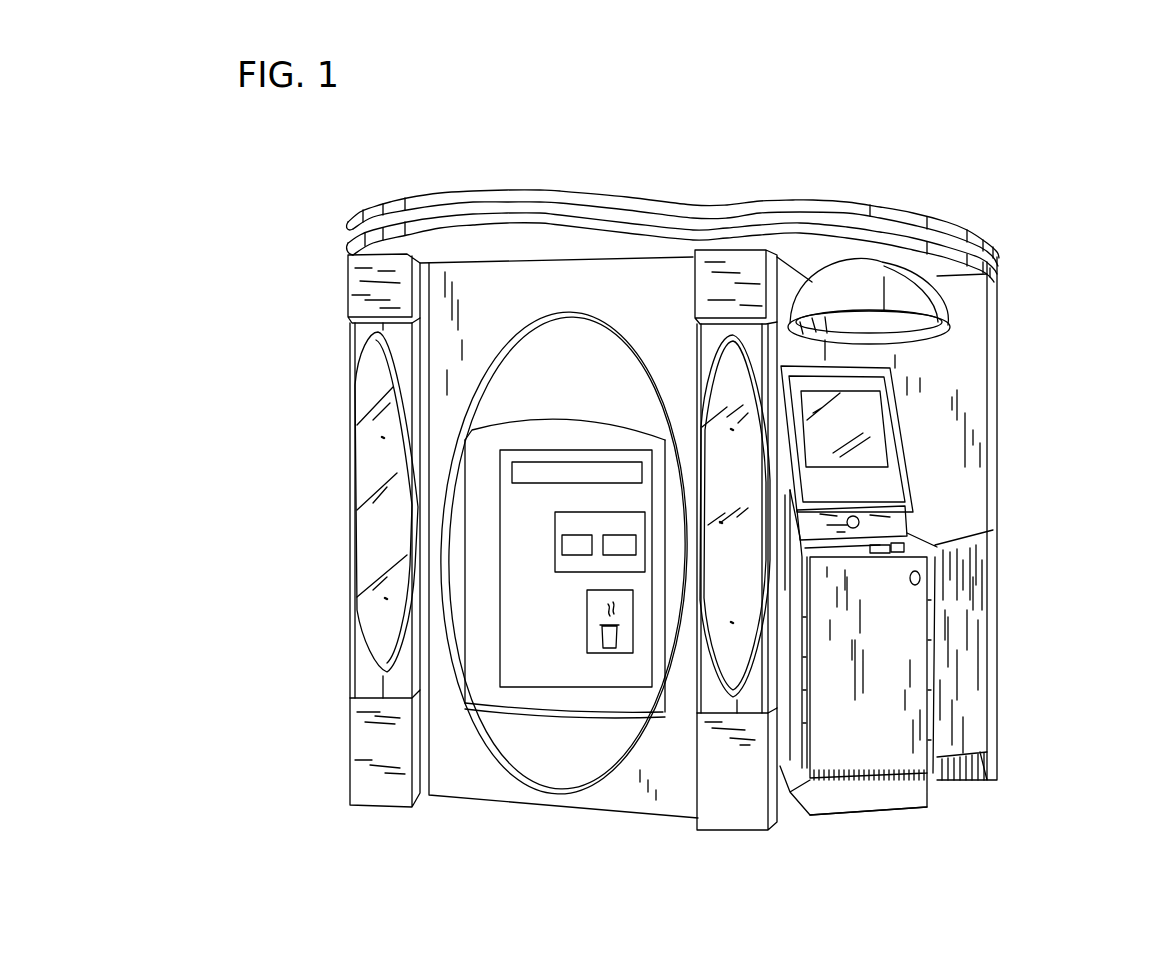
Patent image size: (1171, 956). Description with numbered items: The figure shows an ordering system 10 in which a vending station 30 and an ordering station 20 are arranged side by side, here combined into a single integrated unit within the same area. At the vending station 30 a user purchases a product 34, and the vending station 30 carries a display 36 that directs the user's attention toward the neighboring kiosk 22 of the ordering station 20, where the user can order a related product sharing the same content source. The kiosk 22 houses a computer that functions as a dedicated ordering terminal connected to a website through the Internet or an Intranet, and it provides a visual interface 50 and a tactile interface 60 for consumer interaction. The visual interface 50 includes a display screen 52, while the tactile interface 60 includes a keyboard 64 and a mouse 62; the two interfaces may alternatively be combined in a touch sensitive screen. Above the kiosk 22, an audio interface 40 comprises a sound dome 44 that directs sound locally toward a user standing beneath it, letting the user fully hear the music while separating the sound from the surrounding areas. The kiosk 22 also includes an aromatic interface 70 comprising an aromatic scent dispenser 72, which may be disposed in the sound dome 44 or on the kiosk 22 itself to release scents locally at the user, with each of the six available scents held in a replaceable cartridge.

The ordering system 10 is at (845, 116).
The ordering station 20 is at (918, 458).
The kiosk 22 is at (917, 805).
The vending station 30 is at (526, 503).
The product 34 is at (600, 638).
The display 36 is at (543, 465).
The audio interface 40 is at (950, 332).
The sound dome 44 is at (968, 292).
The visual interface 50 is at (895, 416).
The display screen 52 is at (862, 388).
The tactile interface 60 is at (885, 570).
The mouse 62 is at (915, 548).
The keyboard 64 is at (857, 557).
The aromatic interface 70 is at (890, 522).
The aromatic scent dispenser 72 is at (880, 503).